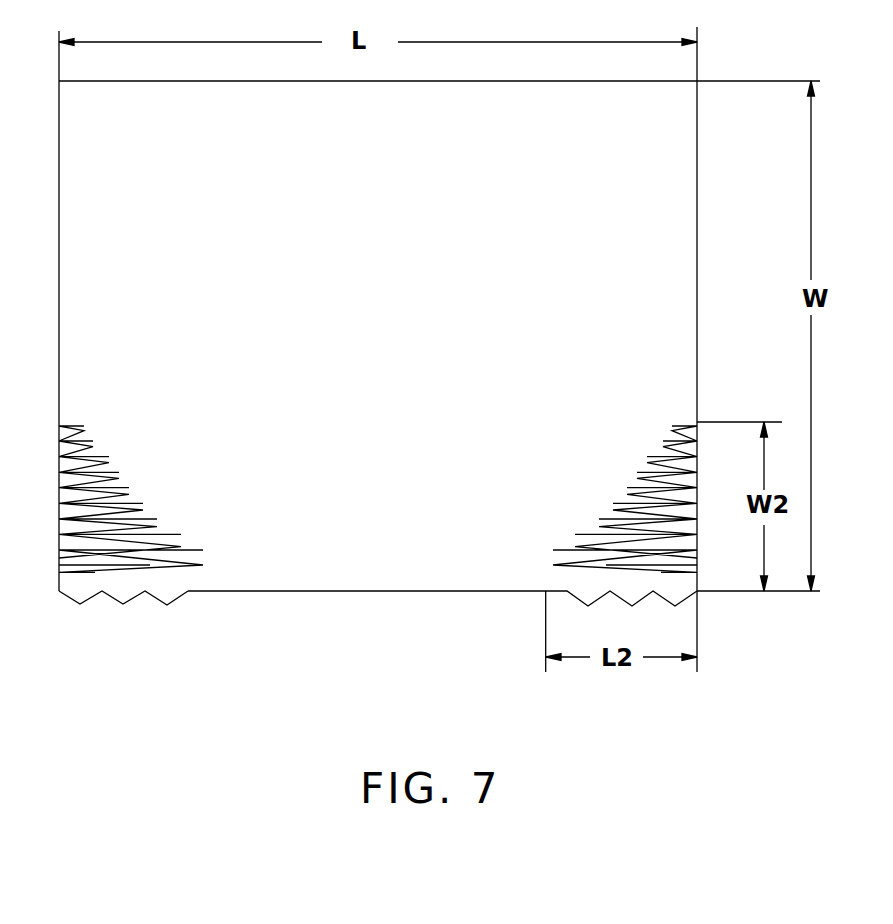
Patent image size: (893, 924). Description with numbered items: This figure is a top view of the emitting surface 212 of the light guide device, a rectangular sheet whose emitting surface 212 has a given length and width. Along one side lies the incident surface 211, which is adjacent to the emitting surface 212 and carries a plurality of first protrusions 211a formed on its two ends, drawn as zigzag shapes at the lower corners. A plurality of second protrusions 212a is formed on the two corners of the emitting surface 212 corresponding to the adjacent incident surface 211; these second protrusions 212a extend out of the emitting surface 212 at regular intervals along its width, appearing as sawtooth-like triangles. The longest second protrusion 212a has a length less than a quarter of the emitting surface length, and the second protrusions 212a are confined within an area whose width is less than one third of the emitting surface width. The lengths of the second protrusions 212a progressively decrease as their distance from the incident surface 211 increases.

The emitting surface 212 is at (658, 148).
The incident surface 211 is at (280, 591).
The first protrusions 211a is at (80, 601).
The second protrusions 212a is at (78, 568).